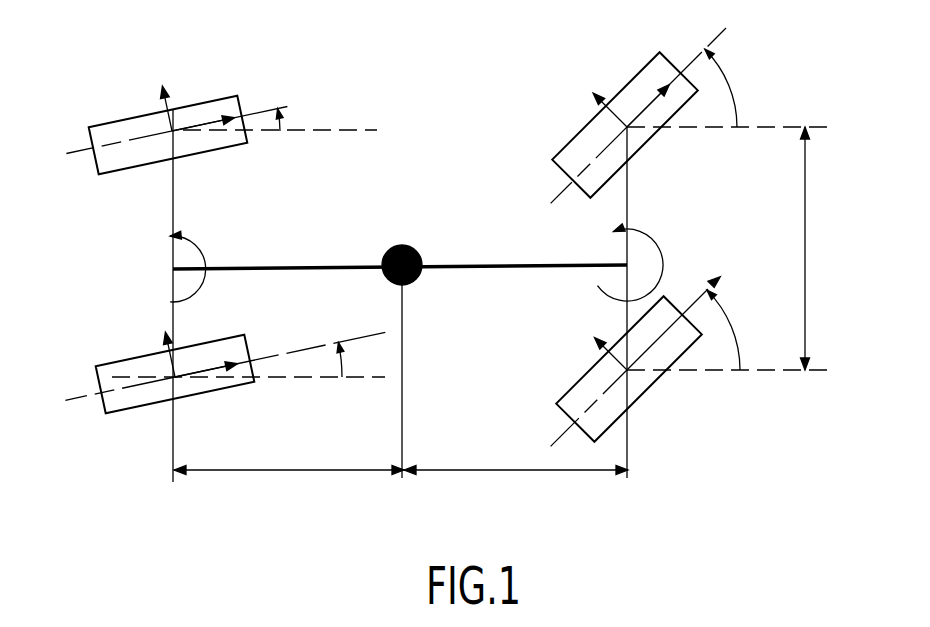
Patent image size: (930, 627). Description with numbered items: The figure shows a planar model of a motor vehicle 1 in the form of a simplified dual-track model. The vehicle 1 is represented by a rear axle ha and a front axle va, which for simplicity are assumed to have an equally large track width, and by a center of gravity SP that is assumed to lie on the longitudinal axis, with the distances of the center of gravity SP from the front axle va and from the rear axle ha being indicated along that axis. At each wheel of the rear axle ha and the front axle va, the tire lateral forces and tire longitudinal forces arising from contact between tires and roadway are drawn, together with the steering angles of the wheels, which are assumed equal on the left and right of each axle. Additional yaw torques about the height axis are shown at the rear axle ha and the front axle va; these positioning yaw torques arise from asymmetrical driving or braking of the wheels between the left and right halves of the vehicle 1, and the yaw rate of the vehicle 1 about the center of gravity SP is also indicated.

The motor vehicle 1 is at (391, 83).
The rear axle ha is at (84, 198).
The front axle va is at (539, 188).
The center of gravity of the vehicle SP is at (407, 350).